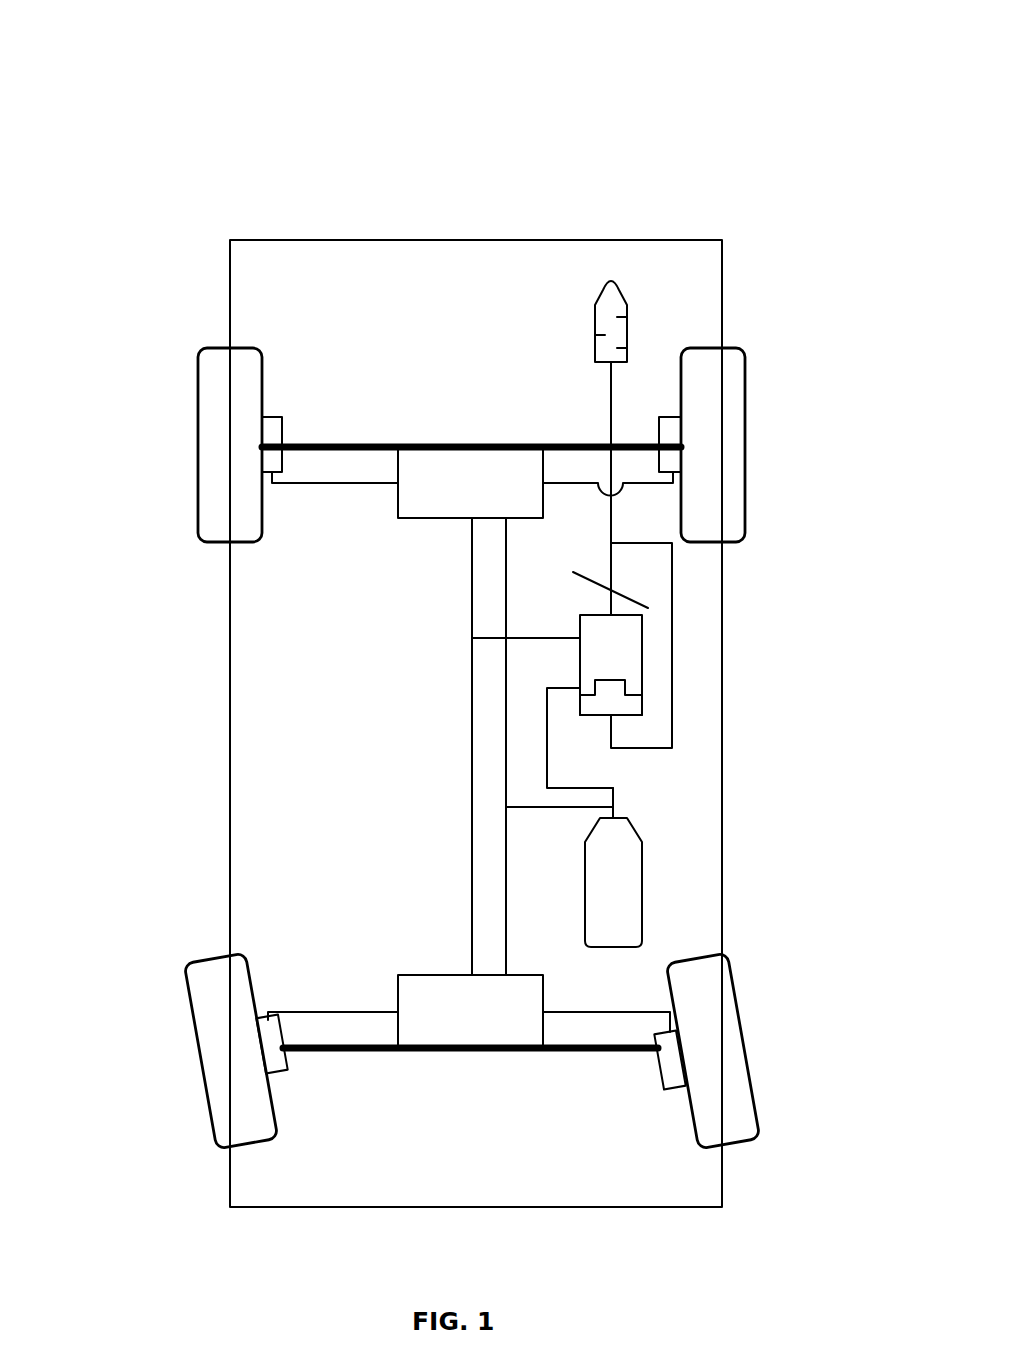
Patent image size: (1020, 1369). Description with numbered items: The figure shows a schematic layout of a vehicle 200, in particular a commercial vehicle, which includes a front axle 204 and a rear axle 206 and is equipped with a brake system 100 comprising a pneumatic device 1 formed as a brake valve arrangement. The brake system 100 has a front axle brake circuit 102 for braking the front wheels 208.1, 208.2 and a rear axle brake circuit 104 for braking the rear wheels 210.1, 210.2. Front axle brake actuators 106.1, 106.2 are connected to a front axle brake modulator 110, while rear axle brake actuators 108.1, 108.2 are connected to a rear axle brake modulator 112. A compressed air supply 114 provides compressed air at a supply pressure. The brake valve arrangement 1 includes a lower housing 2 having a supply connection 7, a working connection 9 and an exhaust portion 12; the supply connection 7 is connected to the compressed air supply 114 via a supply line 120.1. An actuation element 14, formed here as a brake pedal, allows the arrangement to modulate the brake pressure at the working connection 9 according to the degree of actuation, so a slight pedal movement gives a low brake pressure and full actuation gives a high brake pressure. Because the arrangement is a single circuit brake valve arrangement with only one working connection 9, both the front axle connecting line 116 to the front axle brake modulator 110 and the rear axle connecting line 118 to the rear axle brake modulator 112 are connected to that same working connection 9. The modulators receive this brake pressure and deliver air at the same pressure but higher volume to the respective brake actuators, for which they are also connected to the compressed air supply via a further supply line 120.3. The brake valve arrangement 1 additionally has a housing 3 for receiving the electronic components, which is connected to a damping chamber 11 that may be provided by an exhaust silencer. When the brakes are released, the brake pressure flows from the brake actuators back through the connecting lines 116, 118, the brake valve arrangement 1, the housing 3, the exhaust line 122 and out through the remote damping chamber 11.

The vehicle 200 is at (184, 168).
The brake system 100 is at (422, 770).
The front axle brake circuit 102 is at (521, 1067).
The rear axle brake circuit 104 is at (500, 388).
The front axle brake actuator 106.1 is at (278, 1072).
The front axle brake actuator 106.2 is at (677, 1087).
The rear axle brake actuator 108.1 is at (275, 417).
The rear axle brake actuator 108.2 is at (669, 417).
The front axle brake modulator 110 is at (452, 1028).
The rear axle brake modulator 112 is at (448, 460).
The compressed air supply 114 is at (600, 948).
The front axle connecting line 116 is at (472, 897).
The rear axle connecting line 118 is at (472, 580).
The supply line 120.1 is at (615, 795).
The supply line 120.3 is at (506, 712).
The exhaust line 122 is at (672, 595).
The front axle 204 is at (362, 1053).
The rear axle 206 is at (358, 443).
The front wheel 208.1 is at (203, 1068).
The front wheel 208.2 is at (743, 1050).
The rear wheel 210.1 is at (198, 456).
The rear wheel 210.2 is at (745, 447).
The pneumatic device 1 is at (574, 624).
The lower housing 2 is at (642, 680).
The housing for receiving the electronic components 3 is at (580, 615).
The supply connection 7 is at (578, 690).
The working connection 9 is at (506, 628).
The damping chamber 11 is at (593, 325).
The exhaust portion 12 is at (631, 723).
The actuation element 14 is at (580, 572).